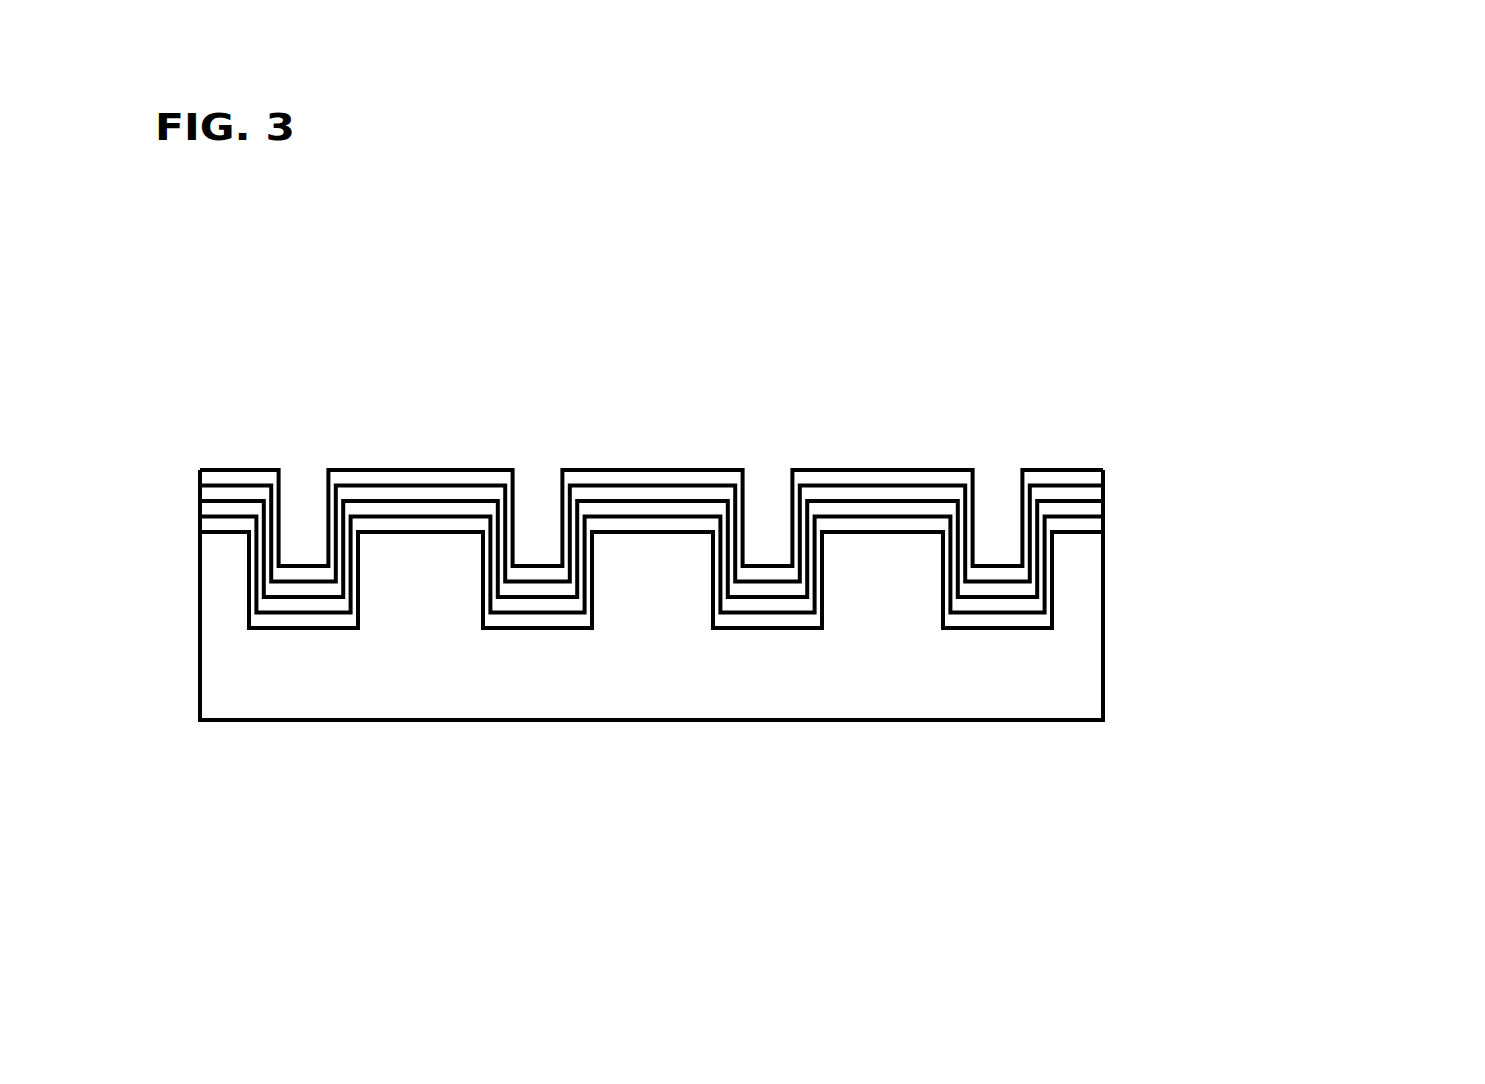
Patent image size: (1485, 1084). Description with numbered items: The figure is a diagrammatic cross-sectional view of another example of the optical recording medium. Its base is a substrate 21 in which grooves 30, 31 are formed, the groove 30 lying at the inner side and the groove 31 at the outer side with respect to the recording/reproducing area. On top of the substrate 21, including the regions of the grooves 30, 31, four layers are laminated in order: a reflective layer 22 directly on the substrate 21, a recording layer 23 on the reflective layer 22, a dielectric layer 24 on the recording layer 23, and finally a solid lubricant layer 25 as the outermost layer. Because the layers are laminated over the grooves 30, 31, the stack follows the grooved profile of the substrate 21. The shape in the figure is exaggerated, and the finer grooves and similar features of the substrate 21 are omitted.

The substrate 21 is at (1104, 675).
The reflective layer 22 is at (1108, 526).
The recording layer 23 is at (1107, 508).
The dielectric layer 24 is at (1108, 493).
The solid lubricant layer 25 is at (1107, 474).
The groove 30 is at (652, 488).
The groove 31 is at (650, 438).